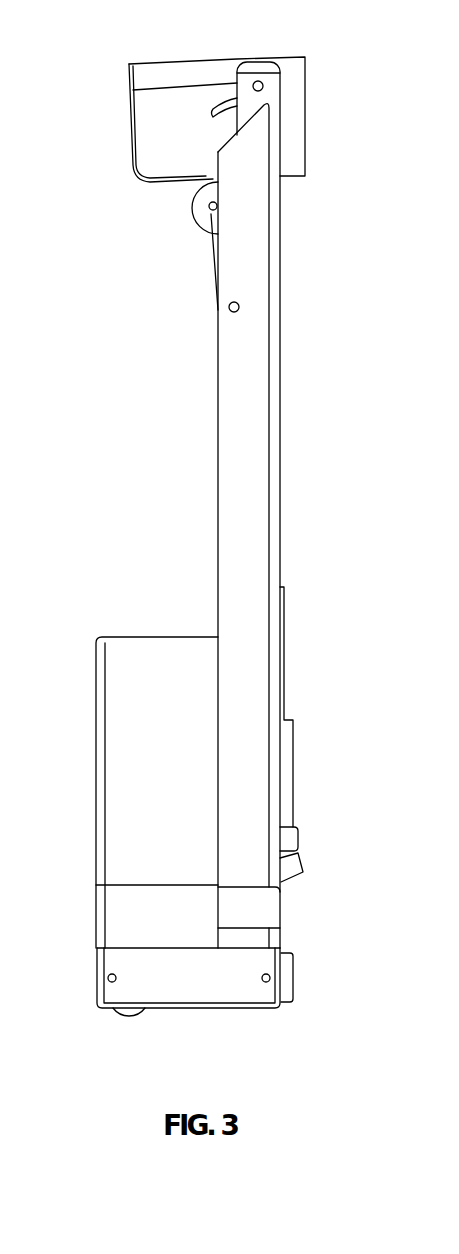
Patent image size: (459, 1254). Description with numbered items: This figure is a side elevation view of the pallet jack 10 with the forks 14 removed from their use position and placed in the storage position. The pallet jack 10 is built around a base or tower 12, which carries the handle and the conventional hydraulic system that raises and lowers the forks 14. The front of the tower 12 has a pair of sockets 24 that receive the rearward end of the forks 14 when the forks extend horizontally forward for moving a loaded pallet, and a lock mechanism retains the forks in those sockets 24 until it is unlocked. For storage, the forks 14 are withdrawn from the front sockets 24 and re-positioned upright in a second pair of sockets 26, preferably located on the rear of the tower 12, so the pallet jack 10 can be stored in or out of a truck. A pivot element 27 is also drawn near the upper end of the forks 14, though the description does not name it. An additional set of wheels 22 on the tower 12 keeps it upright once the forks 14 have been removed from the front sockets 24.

The pallet jack 10 is at (92, 809).
The base or tower 12 is at (152, 637).
The forks or legs 14 is at (237, 375).
The additional set of wheels 22 is at (130, 1012).
The sockets 24 is at (118, 992).
The second pair of sockets 26 is at (265, 915).
The pivot 27 is at (196, 208).